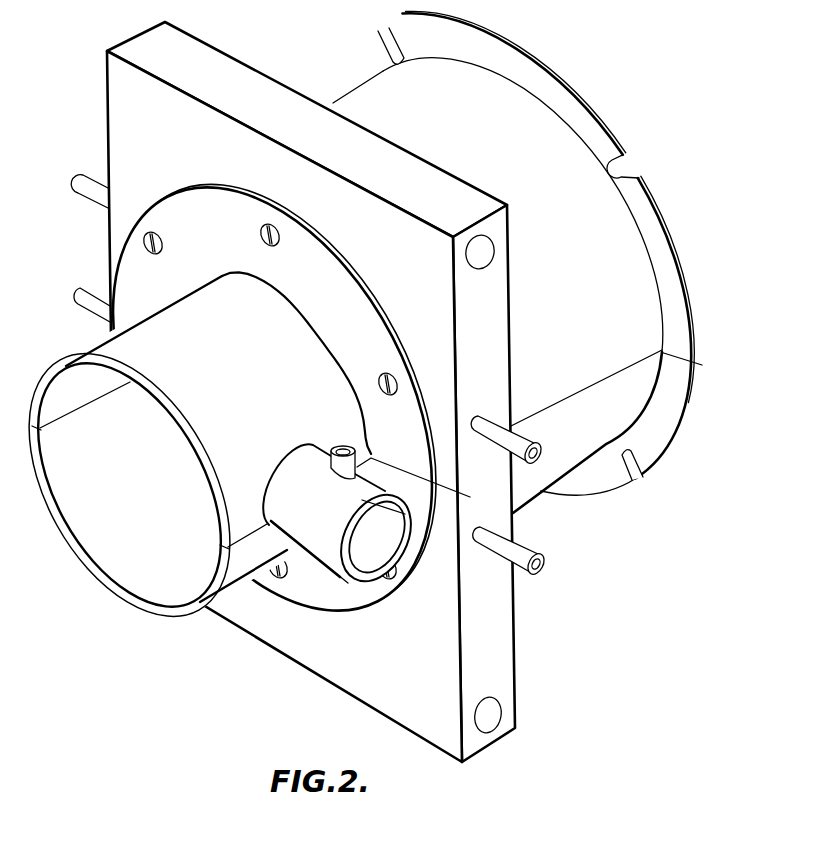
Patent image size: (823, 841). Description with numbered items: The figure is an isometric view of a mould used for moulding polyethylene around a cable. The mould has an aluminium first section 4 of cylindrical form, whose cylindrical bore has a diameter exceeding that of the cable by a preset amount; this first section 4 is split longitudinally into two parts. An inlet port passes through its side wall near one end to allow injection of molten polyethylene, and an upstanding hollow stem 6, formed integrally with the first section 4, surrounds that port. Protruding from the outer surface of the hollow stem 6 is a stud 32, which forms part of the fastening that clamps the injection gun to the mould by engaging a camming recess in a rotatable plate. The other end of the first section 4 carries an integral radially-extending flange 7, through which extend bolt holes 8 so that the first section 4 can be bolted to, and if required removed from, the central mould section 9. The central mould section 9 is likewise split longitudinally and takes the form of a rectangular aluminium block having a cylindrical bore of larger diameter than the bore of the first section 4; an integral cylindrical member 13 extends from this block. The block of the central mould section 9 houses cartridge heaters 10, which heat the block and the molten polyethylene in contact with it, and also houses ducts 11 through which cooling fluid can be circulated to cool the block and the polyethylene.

The first section 4 is at (110, 537).
The hollow stem 6 is at (348, 520).
The radially-extending flange 7 is at (148, 283).
The bolt holes 8 is at (386, 380).
The central mould section 9 is at (316, 392).
The cartridge heaters 10 is at (487, 258).
The ducts 11 is at (516, 440).
The cylindrical member 13 is at (370, 110).
The stud 32 is at (340, 467).